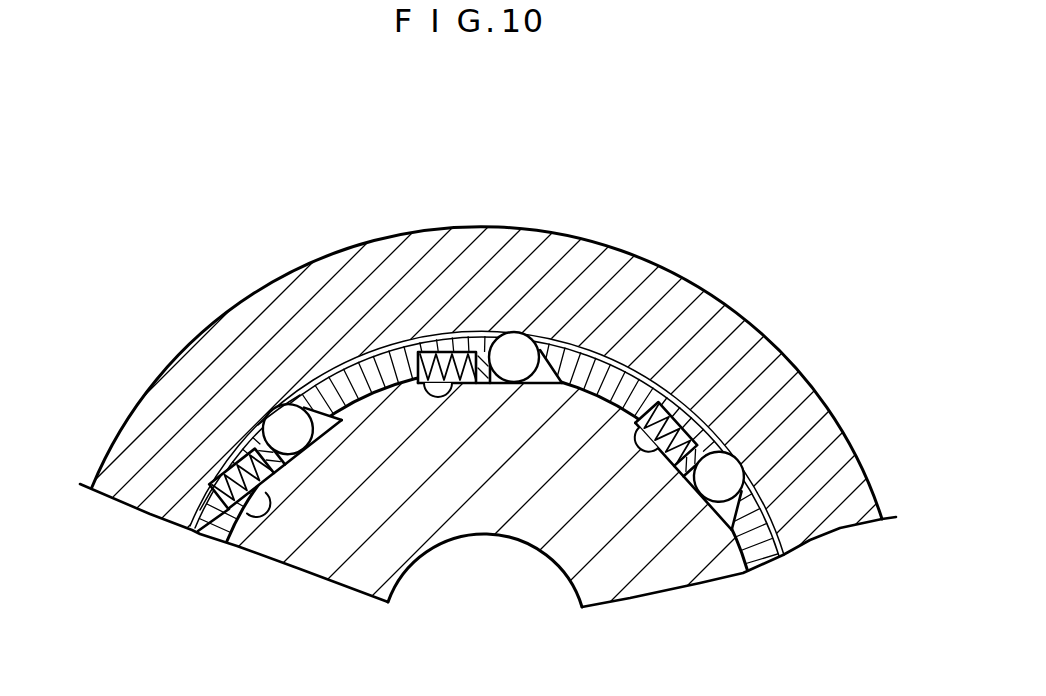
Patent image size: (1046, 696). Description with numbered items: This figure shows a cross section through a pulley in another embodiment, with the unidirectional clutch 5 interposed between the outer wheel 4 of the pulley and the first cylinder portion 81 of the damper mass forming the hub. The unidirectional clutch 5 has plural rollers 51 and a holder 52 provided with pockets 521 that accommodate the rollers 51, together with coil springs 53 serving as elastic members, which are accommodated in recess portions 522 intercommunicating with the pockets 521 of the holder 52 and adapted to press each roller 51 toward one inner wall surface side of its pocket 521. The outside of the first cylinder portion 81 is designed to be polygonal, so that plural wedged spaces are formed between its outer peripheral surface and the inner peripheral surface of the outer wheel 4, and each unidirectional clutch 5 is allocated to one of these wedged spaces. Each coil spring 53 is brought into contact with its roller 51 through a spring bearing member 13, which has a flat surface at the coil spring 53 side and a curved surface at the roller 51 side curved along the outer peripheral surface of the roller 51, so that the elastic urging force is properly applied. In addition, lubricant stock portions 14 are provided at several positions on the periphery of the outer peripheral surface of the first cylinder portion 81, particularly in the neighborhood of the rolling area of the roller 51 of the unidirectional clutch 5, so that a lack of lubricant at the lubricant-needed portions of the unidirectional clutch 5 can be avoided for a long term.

The outer wheel 4 is at (683, 295).
The unidirectional clutch 5 is at (535, 153).
The roller 51 is at (511, 348).
The holder 52 is at (387, 366).
The coil spring 53 is at (443, 350).
The pocket 521 is at (276, 410).
The recess portion 522 is at (225, 487).
The spring bearing member 13 is at (478, 390).
The lubricant stock portion 14 is at (424, 390).
The first cylinder portion 81 is at (530, 532).